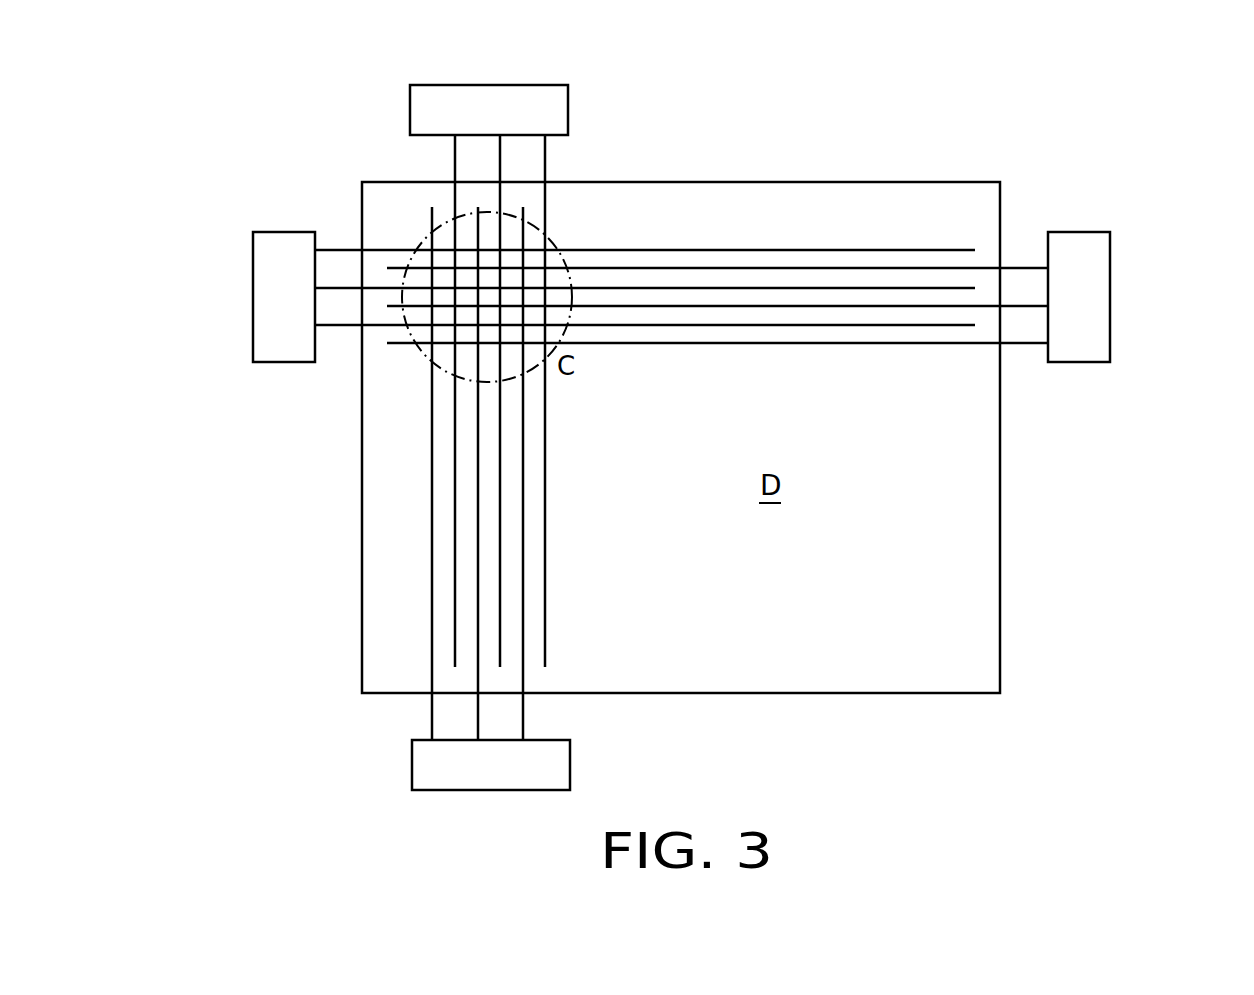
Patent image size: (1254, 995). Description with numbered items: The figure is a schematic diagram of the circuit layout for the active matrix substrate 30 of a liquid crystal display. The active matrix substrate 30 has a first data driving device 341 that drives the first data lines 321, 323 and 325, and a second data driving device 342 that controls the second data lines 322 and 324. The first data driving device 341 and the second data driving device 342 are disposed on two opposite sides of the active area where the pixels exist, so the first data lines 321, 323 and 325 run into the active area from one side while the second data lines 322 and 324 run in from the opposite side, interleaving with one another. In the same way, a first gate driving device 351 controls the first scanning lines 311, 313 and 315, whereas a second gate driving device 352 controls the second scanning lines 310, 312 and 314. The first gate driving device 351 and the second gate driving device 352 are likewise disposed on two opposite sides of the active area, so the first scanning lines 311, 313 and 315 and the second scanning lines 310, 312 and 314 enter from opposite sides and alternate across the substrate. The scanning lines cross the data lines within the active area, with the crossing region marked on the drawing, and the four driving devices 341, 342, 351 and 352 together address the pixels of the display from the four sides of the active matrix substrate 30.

The active matrix substrate 30 is at (996, 117).
The second scanning line 310 is at (330, 250).
The first scanning line 311 is at (1035, 268).
The second scanning line 312 is at (346, 288).
The first scanning line 313 is at (1018, 306).
The second scanning line 314 is at (336, 325).
The first scanning line 315 is at (1030, 343).
The first data line 321 is at (455, 152).
The second data line 322 is at (478, 715).
The first data line 323 is at (500, 160).
The second data line 324 is at (523, 727).
The first data line 325 is at (547, 150).
The first data driving device 341 is at (488, 95).
The second data driving device 342 is at (488, 778).
The first gate driving device 351 is at (1103, 293).
The second gate driving device 352 is at (262, 292).